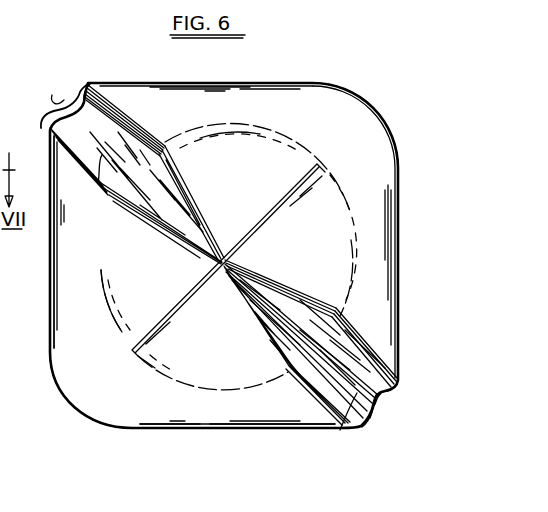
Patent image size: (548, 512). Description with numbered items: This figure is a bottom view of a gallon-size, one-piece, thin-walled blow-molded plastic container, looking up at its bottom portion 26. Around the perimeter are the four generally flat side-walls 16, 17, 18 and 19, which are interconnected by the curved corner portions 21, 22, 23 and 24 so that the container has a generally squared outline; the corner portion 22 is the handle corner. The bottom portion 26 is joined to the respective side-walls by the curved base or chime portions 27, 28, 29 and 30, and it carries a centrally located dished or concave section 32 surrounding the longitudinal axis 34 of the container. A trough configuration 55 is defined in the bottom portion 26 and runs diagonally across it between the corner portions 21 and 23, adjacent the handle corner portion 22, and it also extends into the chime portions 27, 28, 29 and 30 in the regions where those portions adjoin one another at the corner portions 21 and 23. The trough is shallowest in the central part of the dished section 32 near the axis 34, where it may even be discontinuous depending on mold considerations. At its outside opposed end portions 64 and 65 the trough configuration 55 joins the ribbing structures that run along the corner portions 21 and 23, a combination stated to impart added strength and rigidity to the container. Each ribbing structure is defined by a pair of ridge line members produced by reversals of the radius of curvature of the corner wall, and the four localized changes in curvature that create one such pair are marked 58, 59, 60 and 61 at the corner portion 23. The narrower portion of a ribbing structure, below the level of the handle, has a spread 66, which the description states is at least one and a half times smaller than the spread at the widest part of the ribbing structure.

The side-wall 16 is at (50, 240).
The side-wall 17 is at (161, 83).
The side-wall 18 is at (403, 256).
The side-wall 19 is at (272, 432).
The curved corner portion 21 is at (84, 92).
The curved corner portion 22 is at (362, 90).
The curved corner portion 23 is at (374, 423).
The curved corner portion 24 is at (88, 413).
The bottom portion 26 is at (318, 243).
The curved base portion 27 is at (82, 302).
The curved base portion 28 is at (237, 402).
The curved base portion 29 is at (398, 168).
The curved base portion 30 is at (236, 98).
The dished section 32 is at (117, 283).
The longitudinal axis 34 is at (222, 260).
The trough configuration 55 is at (100, 187).
The localized change in curvature 58 is at (397, 392).
The localized change in curvature 59 is at (380, 398).
The localized change in curvature 60 is at (381, 399).
The localized change in curvature 61 is at (367, 423).
The end portion of the trough configuration 64 is at (41, 128).
The end portion of the trough configuration 65 is at (365, 392).
The spread 66 is at (52, 95).